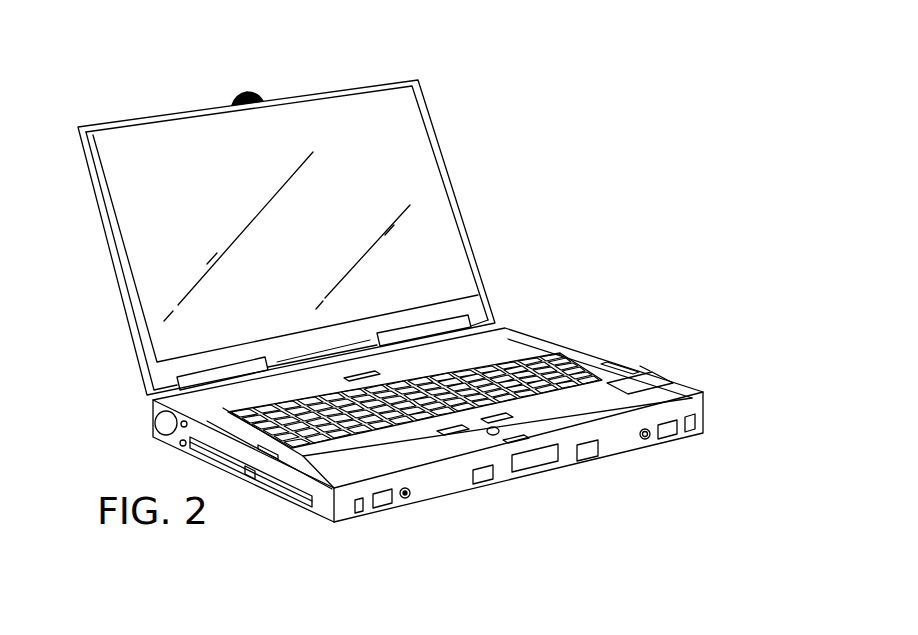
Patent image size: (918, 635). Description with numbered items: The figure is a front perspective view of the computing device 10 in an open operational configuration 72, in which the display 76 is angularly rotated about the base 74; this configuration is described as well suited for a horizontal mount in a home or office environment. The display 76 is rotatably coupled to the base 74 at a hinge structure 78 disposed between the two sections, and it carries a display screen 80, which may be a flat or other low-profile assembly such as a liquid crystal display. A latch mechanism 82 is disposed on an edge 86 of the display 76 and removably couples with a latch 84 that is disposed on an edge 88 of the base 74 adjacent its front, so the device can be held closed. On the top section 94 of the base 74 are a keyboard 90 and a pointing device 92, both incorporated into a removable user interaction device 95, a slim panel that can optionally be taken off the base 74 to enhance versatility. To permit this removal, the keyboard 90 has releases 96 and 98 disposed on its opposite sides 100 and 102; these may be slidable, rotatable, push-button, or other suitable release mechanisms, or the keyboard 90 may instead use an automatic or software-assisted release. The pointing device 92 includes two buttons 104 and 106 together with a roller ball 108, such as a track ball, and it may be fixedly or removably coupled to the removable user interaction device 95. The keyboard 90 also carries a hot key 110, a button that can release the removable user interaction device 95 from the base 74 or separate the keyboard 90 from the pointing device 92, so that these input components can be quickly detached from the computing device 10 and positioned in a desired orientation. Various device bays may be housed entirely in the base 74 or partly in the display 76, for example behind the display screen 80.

The computing device 10 is at (527, 165).
The operational configuration 72 is at (393, 314).
The base 74 is at (707, 415).
The display 76 is at (95, 199).
The hinge structure 78 is at (501, 316).
The display screen 80 is at (403, 128).
The latch mechanism 82 is at (243, 93).
The latch 84 is at (518, 445).
The edge 86 is at (328, 86).
The edge 88 is at (580, 430).
The keyboard 90 is at (560, 352).
The pointing device 92 is at (441, 439).
The top section 94 is at (660, 384).
The removable user interaction device 95 is at (350, 460).
The release 96 is at (265, 452).
The release 98 is at (623, 363).
The side 100 is at (298, 478).
The side 102 is at (647, 370).
The button 104 is at (457, 434).
The button 106 is at (512, 418).
The roller ball 108 is at (494, 436).
The hot key 110 is at (157, 410).